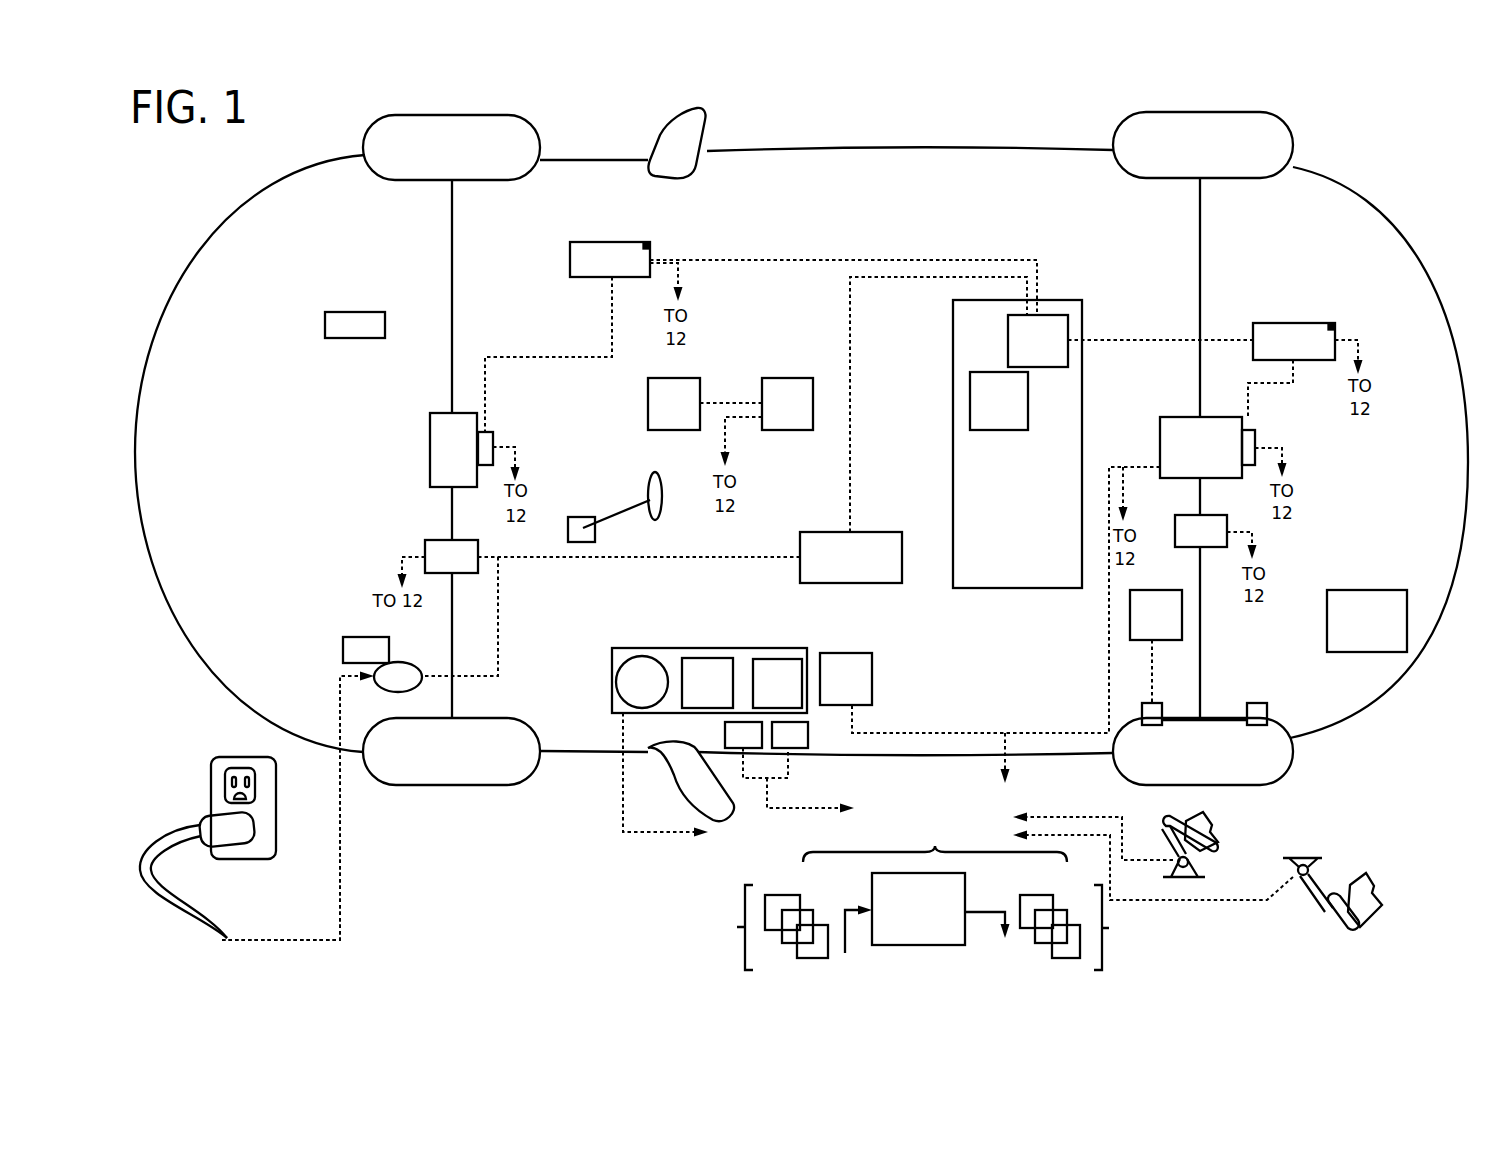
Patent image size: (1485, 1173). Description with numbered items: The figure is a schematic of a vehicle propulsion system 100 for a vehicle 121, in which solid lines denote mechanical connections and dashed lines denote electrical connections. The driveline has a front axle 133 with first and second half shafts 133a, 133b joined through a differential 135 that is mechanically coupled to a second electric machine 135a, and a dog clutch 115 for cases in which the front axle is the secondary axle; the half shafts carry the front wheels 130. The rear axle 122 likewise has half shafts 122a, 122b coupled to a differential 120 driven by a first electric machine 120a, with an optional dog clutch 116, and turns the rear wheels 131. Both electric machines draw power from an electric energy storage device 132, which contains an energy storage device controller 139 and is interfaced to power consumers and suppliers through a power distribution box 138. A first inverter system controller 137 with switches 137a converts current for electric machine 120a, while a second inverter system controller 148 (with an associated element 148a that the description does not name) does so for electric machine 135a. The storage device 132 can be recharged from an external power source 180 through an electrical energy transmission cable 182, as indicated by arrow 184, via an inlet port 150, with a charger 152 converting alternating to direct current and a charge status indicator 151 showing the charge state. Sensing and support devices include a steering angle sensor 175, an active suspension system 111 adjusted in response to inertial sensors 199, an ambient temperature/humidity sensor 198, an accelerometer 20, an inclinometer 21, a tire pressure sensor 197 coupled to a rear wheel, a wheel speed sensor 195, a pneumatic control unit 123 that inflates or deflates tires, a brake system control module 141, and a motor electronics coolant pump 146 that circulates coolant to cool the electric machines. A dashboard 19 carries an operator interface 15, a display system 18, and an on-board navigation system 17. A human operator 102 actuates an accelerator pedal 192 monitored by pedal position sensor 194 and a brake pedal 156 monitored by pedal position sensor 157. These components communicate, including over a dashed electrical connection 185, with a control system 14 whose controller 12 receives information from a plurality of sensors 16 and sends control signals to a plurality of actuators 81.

The vehicle propulsion system 100 is at (944, 122).
The front wheels 130 is at (478, 115).
The rear wheels 131 is at (1243, 112).
The second inverter system controller 148 is at (610, 259).
The sensor output 148a is at (648, 243).
The motor electronics coolant pump 146 is at (355, 325).
The front axle 133 is at (345, 478).
The first half shaft 133a is at (452, 370).
The second half shaft 133b is at (452, 525).
The differential gear set 135 is at (453, 450).
The second electric machine 135a is at (493, 432).
The dog clutch 115 is at (451, 556).
The charge status indicator 151 is at (366, 650).
The inlet port 150 is at (403, 662).
The steering angle sensor 175 is at (583, 517).
The active suspension system 111 is at (674, 404).
The inertial sensors 199 is at (773, 415).
The charger 152 is at (851, 557).
The electric energy storage device 132 is at (1001, 497).
The power distribution box 138 is at (1038, 341).
The electric energy storage device controller 139 is at (999, 401).
The first inverter system controller 137 is at (1294, 341).
The switches 137a is at (1335, 323).
The rear axle 122 is at (1238, 248).
The first half shaft 122a is at (1200, 228).
The second half shaft 122b is at (1200, 503).
The differential gear set 120 is at (1201, 447).
The first electric machine 120a is at (1255, 430).
The dog clutch 116 is at (1201, 531).
The pneumatic control unit 123 is at (1140, 625).
The brake system control module 141 is at (1351, 631).
The tire pressure sensor 197 is at (1160, 703).
The wheel speed sensor 195 is at (1257, 703).
The communication line 185 is at (1058, 733).
The dashboard 19 is at (740, 648).
The operator interface 15 is at (632, 694).
The display system 18 is at (697, 694).
The on-board navigation system 17 is at (767, 694).
The ambient temperature/humidity sensor 198 is at (831, 690).
The inclinometer 21 is at (734, 745).
The accelerometer 20 is at (781, 745).
The control system 14 is at (935, 830).
The controller 12 is at (918, 909).
The sensors 16 is at (745, 927).
The actuators 81 is at (1107, 927).
The power source 180 is at (211, 787).
The electrical energy transmission cable 182 is at (141, 852).
The arrow 184 is at (270, 940).
The pedal 192 is at (1170, 852).
The pedal position sensor 194 is at (1190, 862).
The human operator 102 is at (1197, 828).
The pedal position sensor 157 is at (1298, 872).
The brake pedal 156 is at (1323, 922).
The vehicle 121 is at (1411, 749).